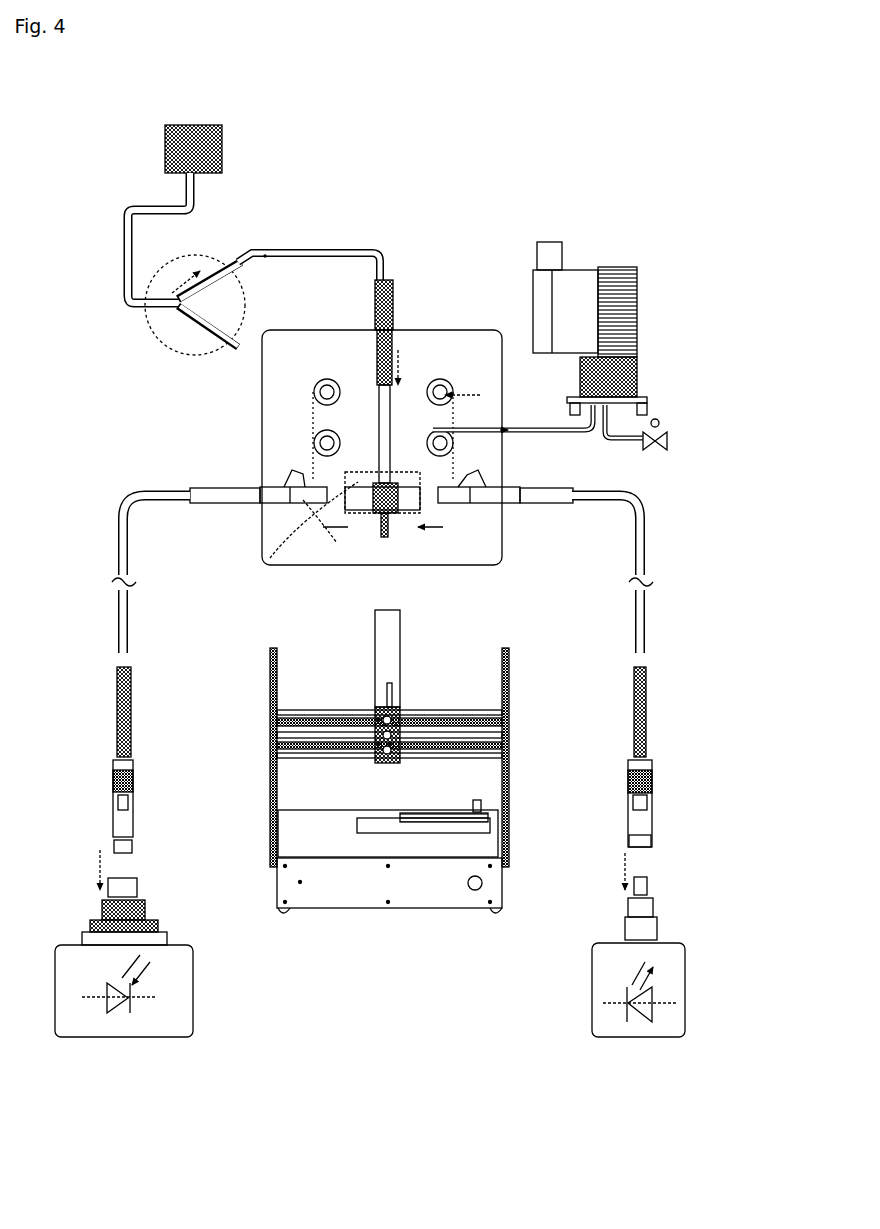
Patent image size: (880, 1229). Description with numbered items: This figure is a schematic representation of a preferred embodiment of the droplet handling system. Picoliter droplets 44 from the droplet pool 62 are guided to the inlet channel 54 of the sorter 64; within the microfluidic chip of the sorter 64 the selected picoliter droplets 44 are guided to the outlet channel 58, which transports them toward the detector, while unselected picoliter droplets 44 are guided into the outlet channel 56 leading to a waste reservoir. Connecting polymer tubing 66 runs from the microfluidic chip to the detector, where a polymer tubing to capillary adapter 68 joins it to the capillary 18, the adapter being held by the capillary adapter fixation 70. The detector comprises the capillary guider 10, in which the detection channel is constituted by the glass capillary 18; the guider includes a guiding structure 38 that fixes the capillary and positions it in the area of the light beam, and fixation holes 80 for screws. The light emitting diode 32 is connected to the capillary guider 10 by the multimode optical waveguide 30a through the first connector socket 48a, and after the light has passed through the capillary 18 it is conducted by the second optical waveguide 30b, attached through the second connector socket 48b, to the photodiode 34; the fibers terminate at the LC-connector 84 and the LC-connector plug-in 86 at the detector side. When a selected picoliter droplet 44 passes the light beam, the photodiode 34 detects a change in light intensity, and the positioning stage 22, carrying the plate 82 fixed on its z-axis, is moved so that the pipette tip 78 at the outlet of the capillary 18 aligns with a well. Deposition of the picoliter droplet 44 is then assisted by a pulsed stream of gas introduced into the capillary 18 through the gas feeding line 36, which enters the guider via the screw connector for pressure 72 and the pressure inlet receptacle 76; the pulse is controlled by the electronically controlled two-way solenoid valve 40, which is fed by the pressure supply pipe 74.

The capillary guider 10 is at (317, 428).
The capillary 18 is at (381, 390).
The positioning stage 22 is at (510, 650).
The multimode optical waveguide 30a is at (642, 520).
The single-mode optical waveguide 30b is at (128, 523).
The light emitting diode 32 is at (657, 932).
The photodiode 34 is at (109, 988).
The gas feeding line 36 is at (513, 430).
The guiding structure 38 is at (397, 478).
The two-way solenoid valve 40 is at (538, 333).
The picoliter droplet 44 is at (337, 250).
The first connector socket 48a is at (445, 498).
The second connector socket 48b is at (362, 495).
The inlet channel 54 is at (140, 335).
The outlet channel towards waste reservoir 56 is at (197, 330).
The outlet channel towards the detector 58 is at (216, 265).
The droplet pool 62 is at (176, 148).
The sorter 64 is at (189, 319).
The connecting polymer tubing 66 is at (267, 258).
The polymer tubing to capillary adapter 68 is at (389, 292).
The capillary adapter fixation 70 is at (371, 422).
The screw connector for pressure 72 is at (405, 450).
The pressure supply pipe 74 is at (628, 448).
The pressure inlet receptacle 76 is at (360, 482).
The pipette tip 78 is at (383, 518).
The fixation holes 80 is at (480, 395).
The plate 82 is at (363, 710).
The LC-connector 84 is at (643, 888).
The LC-connector plug-in 86 is at (133, 877).